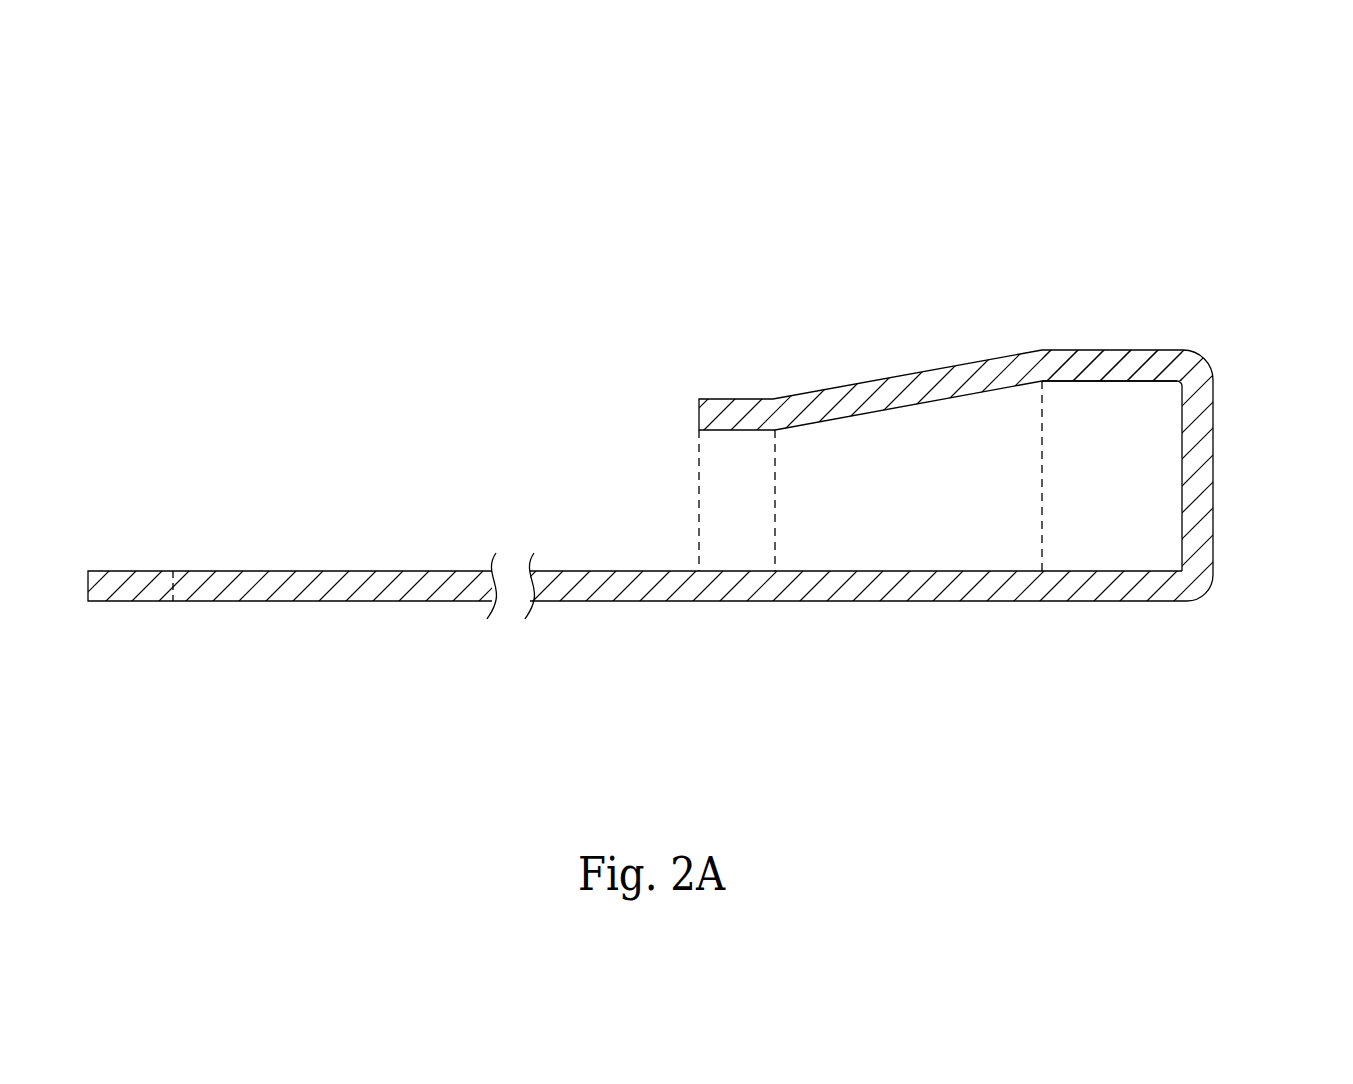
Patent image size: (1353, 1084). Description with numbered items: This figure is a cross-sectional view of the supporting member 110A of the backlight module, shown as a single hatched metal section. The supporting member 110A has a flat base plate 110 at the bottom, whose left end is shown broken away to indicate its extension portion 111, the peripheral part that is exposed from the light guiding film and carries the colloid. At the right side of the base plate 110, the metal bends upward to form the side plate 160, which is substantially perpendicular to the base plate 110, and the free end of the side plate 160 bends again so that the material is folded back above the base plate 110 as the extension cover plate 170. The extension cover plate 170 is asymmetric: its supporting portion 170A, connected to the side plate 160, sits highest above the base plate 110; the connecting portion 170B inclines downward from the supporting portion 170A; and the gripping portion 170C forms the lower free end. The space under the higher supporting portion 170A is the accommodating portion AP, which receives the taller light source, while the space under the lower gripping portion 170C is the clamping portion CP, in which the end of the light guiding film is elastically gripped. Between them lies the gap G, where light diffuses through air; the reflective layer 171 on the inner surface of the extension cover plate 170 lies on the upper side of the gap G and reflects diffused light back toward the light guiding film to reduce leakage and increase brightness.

The supporting member 110A is at (253, 125).
The base plate 110 is at (595, 588).
The extension portion 111 is at (118, 588).
The side plate 160 is at (1195, 470).
The extension cover plate 170 is at (1168, 152).
The supporting portion 170A is at (1133, 363).
The connecting portion 170B is at (935, 387).
The gripping portion 170C is at (746, 415).
The reflective layer 171 is at (871, 388).
The clamping portion CP is at (736, 498).
The gap G is at (906, 498).
The accommodating portion AP is at (1110, 498).